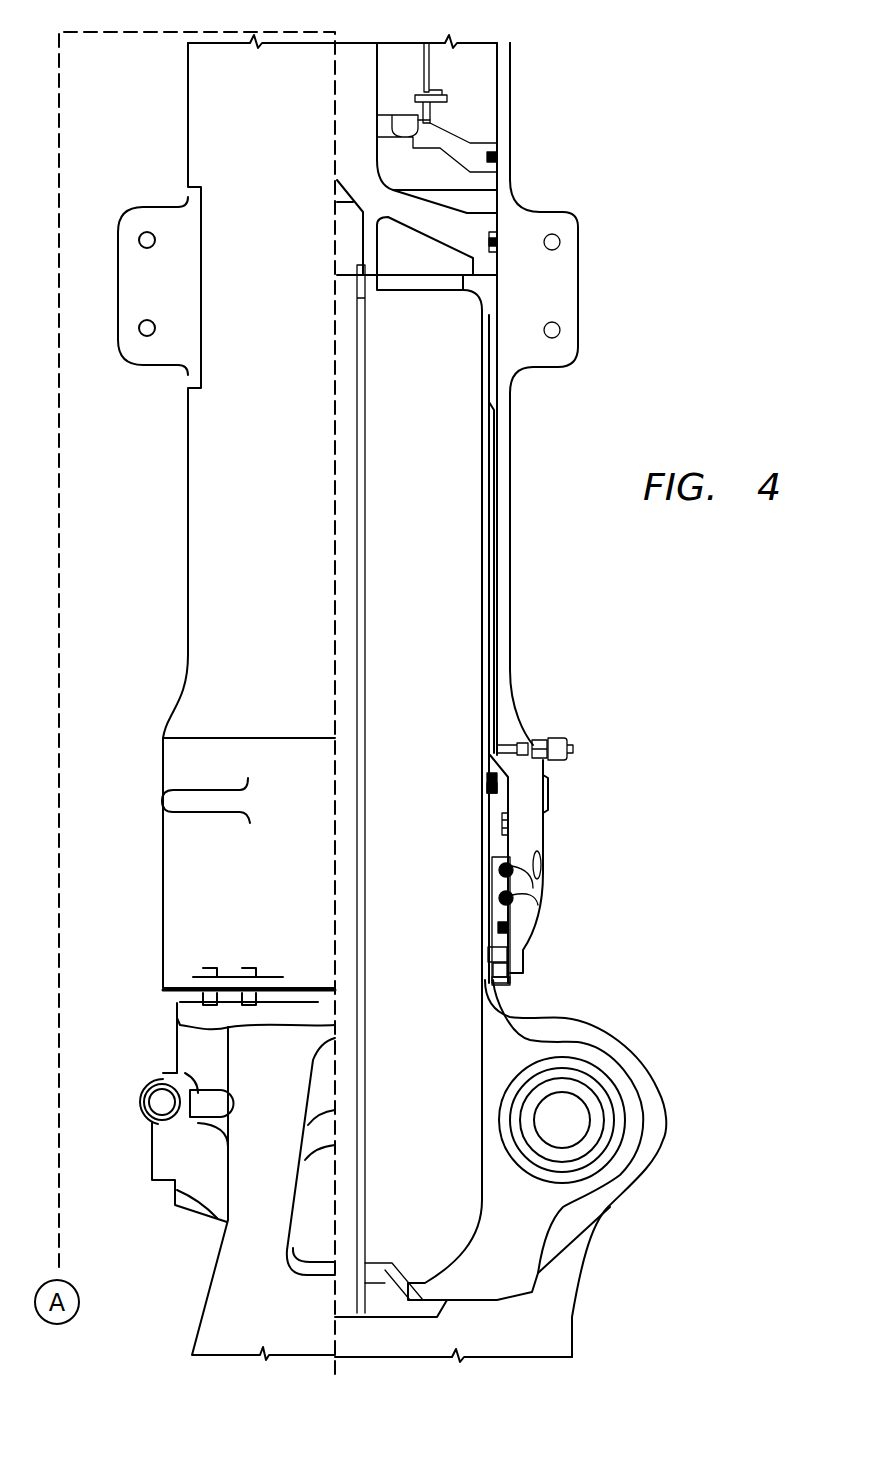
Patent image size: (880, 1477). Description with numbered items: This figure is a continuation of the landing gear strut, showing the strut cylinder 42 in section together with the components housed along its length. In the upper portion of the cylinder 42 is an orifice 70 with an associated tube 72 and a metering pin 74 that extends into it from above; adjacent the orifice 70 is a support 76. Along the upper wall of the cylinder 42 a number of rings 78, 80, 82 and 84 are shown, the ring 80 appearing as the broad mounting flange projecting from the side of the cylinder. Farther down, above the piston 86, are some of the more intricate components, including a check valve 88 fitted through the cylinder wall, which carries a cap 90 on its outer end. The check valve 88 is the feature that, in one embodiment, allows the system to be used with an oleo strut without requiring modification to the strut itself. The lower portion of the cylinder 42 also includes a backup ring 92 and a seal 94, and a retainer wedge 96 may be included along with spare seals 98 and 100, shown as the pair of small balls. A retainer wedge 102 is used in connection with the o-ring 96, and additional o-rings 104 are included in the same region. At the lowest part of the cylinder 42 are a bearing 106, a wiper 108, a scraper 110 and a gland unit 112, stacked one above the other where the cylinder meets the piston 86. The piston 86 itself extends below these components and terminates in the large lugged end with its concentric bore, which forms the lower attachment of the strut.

The cylinder 42 is at (511, 425).
The orifice 70 is at (427, 132).
The tube 72 is at (427, 65).
The metering pin 74 is at (380, 60).
The support 76 is at (500, 146).
The ring 78 is at (498, 160).
The ring 80 is at (500, 232).
The ring 82 is at (498, 240).
The ring 84 is at (498, 250).
The piston 86 is at (648, 1055).
The check valve 88 is at (536, 742).
The cap 90 is at (560, 740).
The backup ring 92 is at (487, 777).
The seal 94 is at (487, 787).
The retainer wedge 96 is at (500, 832).
The spare seal 98 is at (540, 868).
The spare seal 100 is at (539, 885).
The retainer wedge 102 is at (510, 832).
The o-ring 104 is at (508, 928).
The bearing 106 is at (520, 932).
The wiper 108 is at (512, 963).
The scraper 110 is at (512, 973).
The gland unit 112 is at (490, 985).